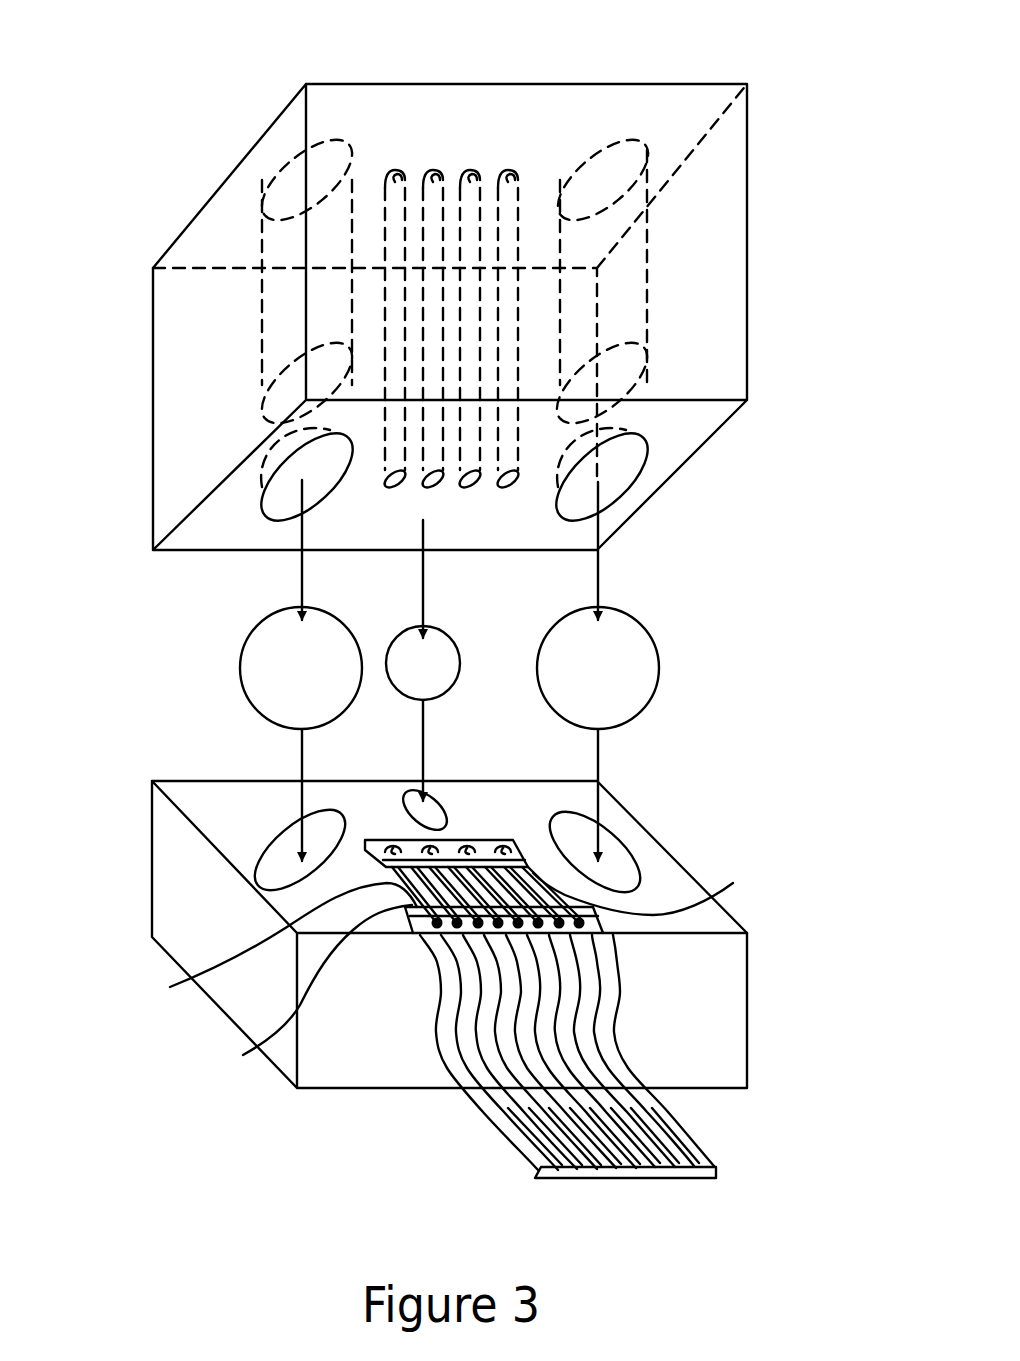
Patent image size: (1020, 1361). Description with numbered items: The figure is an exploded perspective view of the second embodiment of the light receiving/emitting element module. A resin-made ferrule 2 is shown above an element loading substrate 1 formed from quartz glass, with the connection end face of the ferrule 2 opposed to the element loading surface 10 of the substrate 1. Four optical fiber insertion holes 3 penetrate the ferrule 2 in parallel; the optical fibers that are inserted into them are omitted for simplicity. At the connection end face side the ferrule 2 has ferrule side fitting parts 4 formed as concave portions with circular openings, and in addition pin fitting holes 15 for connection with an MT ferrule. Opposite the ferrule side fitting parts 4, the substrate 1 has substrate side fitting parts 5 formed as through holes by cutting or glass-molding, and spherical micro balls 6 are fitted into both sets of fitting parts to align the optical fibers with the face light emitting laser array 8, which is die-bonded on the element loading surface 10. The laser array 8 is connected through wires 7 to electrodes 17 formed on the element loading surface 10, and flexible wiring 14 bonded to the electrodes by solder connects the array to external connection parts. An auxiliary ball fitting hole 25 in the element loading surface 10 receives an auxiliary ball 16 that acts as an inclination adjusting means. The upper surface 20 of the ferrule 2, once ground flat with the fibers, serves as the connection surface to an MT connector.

The element loading substrate 1 is at (722, 1025).
The ferrule 2 is at (722, 352).
The optical fiber insertion holes 3 is at (386, 205).
The ferrule side fitting parts 4 is at (283, 502).
The substrate side fitting parts 5 is at (273, 845).
The micro balls 6 is at (638, 662).
The wires 7 is at (533, 873).
The face light emitting laser array 8 is at (462, 848).
The element loading surface 10 is at (703, 923).
The flexible wiring 14 is at (440, 1090).
The pin fitting holes 15 is at (253, 315).
The auxiliary ball 16 is at (447, 658).
The electrodes 17 is at (455, 976).
The upper surface 20 is at (714, 118).
The auxiliary ball fitting hole 25 is at (403, 792).